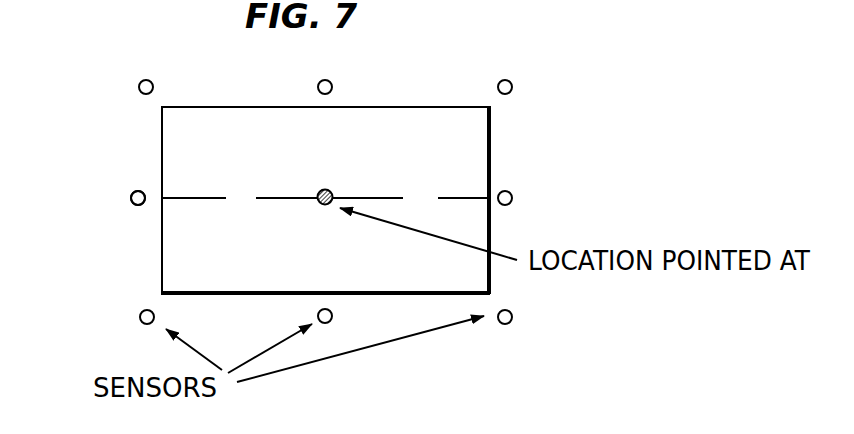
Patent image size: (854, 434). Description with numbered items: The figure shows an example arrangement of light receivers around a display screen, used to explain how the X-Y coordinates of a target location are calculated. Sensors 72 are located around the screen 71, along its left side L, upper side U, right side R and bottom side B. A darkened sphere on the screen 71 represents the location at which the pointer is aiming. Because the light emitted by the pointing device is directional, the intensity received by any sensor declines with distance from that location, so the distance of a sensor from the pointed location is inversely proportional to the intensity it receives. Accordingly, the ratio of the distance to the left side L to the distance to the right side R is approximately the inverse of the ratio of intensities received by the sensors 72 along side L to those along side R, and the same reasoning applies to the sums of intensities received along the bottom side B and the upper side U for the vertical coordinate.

The screen 71 is at (403, 107).
The sensors 72 is at (130, 204).
The left side L is at (101, 181).
The upper side U is at (355, 73).
The right side R is at (545, 181).
The bottom side B is at (354, 342).